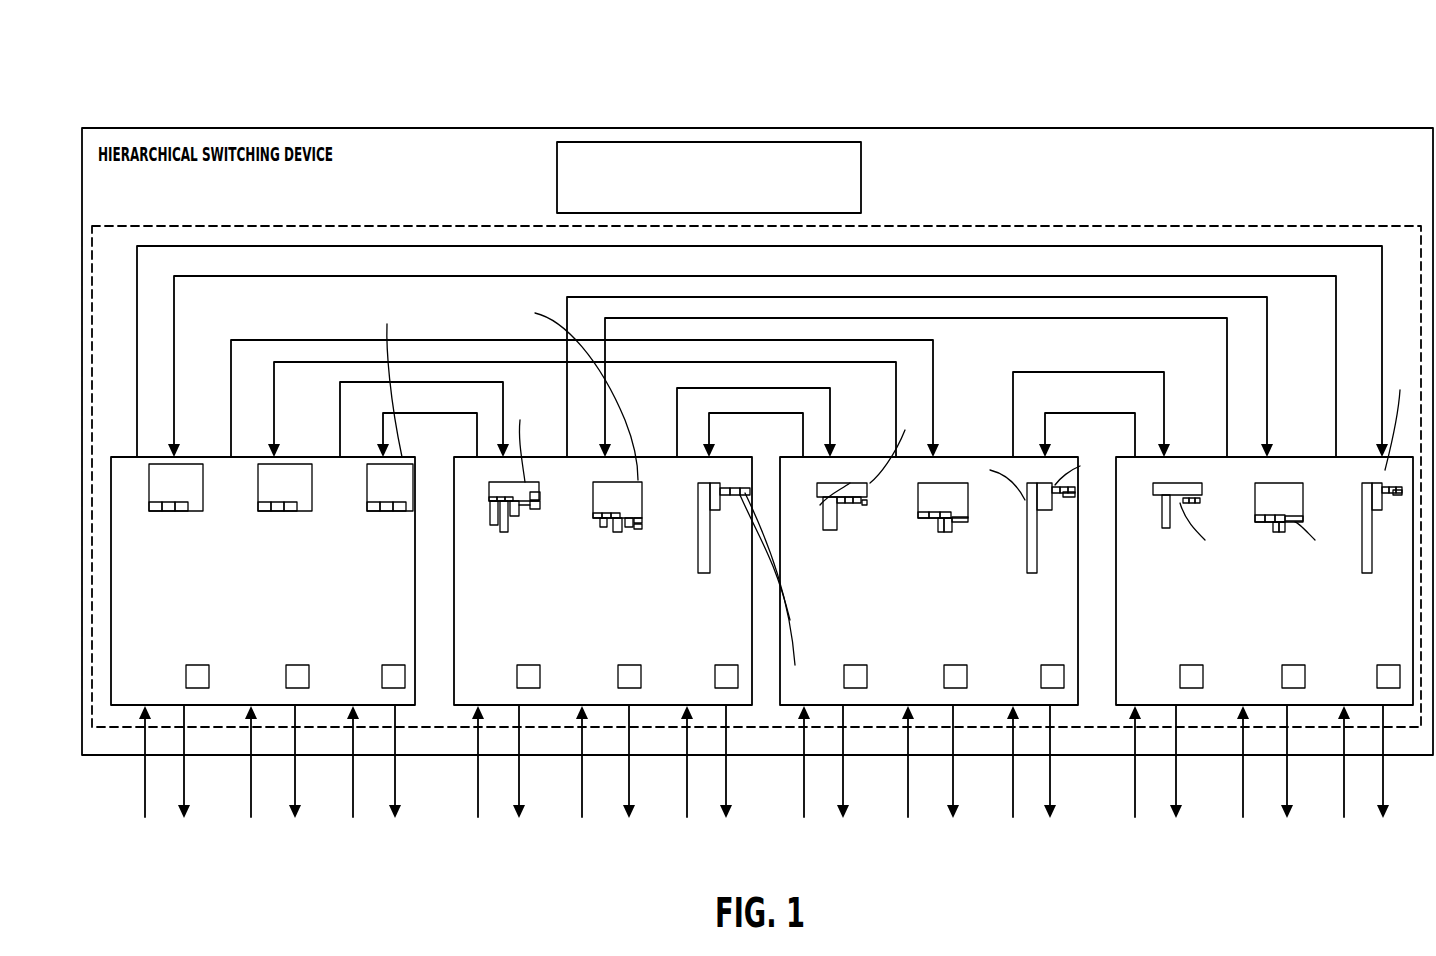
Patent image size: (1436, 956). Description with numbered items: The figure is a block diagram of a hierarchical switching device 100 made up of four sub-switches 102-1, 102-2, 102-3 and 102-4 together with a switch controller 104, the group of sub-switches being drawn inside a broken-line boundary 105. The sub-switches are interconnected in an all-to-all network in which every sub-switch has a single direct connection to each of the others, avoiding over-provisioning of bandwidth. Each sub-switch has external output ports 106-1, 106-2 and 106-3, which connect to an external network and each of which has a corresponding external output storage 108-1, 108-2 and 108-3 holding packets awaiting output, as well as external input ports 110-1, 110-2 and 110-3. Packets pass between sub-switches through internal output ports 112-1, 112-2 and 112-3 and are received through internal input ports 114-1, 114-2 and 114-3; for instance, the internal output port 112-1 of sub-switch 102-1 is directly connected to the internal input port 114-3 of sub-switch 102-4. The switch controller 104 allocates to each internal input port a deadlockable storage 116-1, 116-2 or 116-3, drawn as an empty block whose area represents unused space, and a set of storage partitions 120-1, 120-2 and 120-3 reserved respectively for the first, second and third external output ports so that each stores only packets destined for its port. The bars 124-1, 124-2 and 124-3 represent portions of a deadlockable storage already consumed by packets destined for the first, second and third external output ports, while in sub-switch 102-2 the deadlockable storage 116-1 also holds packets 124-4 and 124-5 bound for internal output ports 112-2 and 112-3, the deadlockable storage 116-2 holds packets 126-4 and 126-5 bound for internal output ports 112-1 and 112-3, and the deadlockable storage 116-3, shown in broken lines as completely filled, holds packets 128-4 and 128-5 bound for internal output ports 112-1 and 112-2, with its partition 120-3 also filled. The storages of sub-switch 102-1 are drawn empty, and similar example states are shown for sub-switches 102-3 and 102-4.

The hierarchical switching device 100 is at (280, 84).
The switch controller 104 is at (861, 180).
The sub-switch array 105 is at (1047, 225).
The sub-switch 102-1 is at (365, 598).
The sub-switch 102-2 is at (702, 643).
The sub-switch 102-3 is at (1019, 600).
The sub-switch 102-4 is at (1359, 627).
The external output port 106-1 is at (177, 706).
The external output port 106-2 is at (288, 706).
The external output port 106-3 is at (388, 706).
The external output storage 108-1 is at (186, 676).
The external output storage 108-2 is at (286, 676).
The external output storage 108-3 is at (382, 676).
The external input port 110-1 is at (138, 706).
The external input port 110-2 is at (244, 706).
The external input port 110-3 is at (346, 706).
The internal output port 112-1 is at (137, 441).
The internal output port 112-2 is at (231, 435).
The internal output port 112-3 is at (340, 445).
The internal input port 114-1 is at (170, 466).
The internal input port 114-2 is at (275, 466).
The internal input port 114-3 is at (382, 466).
The deadlockable storage 116-1 is at (151, 497).
The deadlockable storage 116-2 is at (260, 497).
The deadlockable storage 116-3 is at (893, 413).
The storage partition 120-1 is at (156, 511).
The storage partition 120-2 is at (168, 511).
The storage partition 120-3 is at (181, 511).
The packets 124-1 is at (493, 525).
The packets 124-2 is at (504, 532).
The packets 124-3 is at (515, 516).
The packets 124-4 is at (537, 509).
The packets 124-5 is at (540, 497).
The packets 126-4 is at (641, 528).
The packets 126-5 is at (642, 521).
The packets 128-4 is at (783, 590).
The packets 128-5 is at (781, 557).